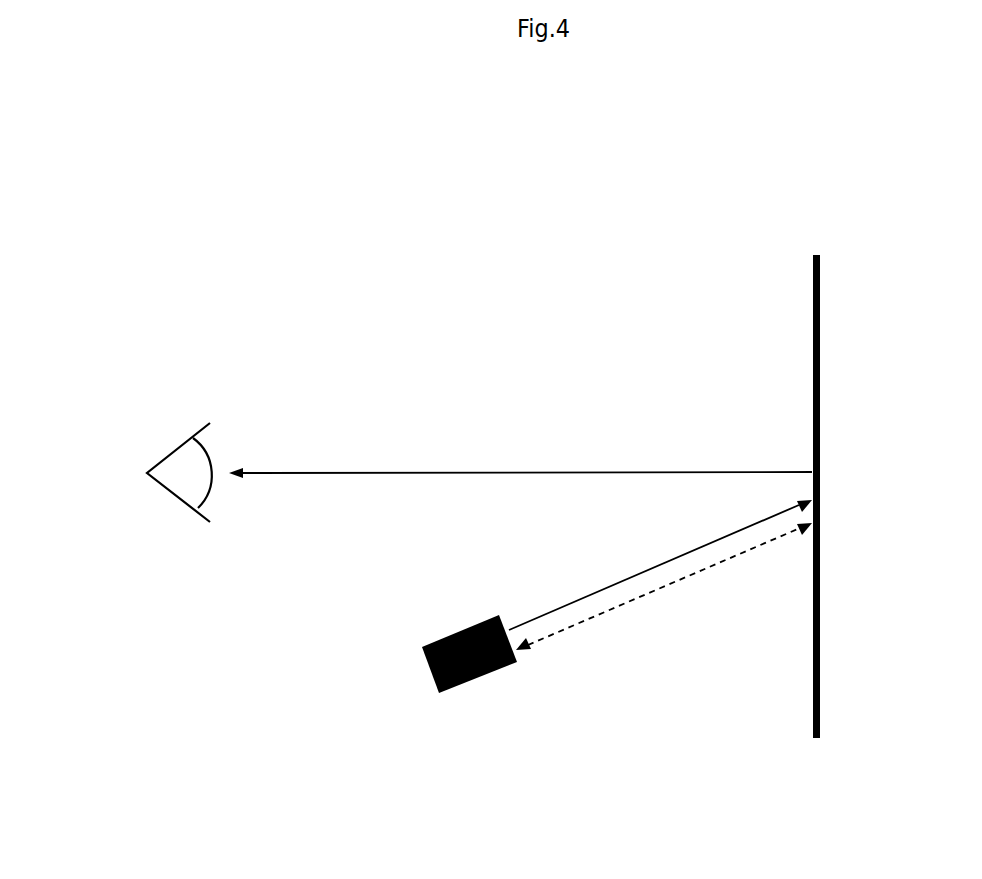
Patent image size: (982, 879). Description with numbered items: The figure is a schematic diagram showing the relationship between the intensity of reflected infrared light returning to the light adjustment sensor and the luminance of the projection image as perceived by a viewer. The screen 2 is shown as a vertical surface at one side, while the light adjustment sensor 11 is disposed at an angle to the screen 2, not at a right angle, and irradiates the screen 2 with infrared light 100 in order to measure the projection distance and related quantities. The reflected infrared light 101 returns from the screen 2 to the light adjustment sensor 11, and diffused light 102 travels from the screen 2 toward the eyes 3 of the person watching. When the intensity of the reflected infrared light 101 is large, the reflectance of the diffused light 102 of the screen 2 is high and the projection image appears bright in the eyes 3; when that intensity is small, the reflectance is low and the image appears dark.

The screen 2 is at (818, 278).
The eyes 3 is at (173, 448).
The light adjustment sensor 11 is at (460, 685).
The infrared light 100 is at (603, 588).
The reflected infrared light 101 is at (690, 575).
The diffused light 102 is at (492, 472).